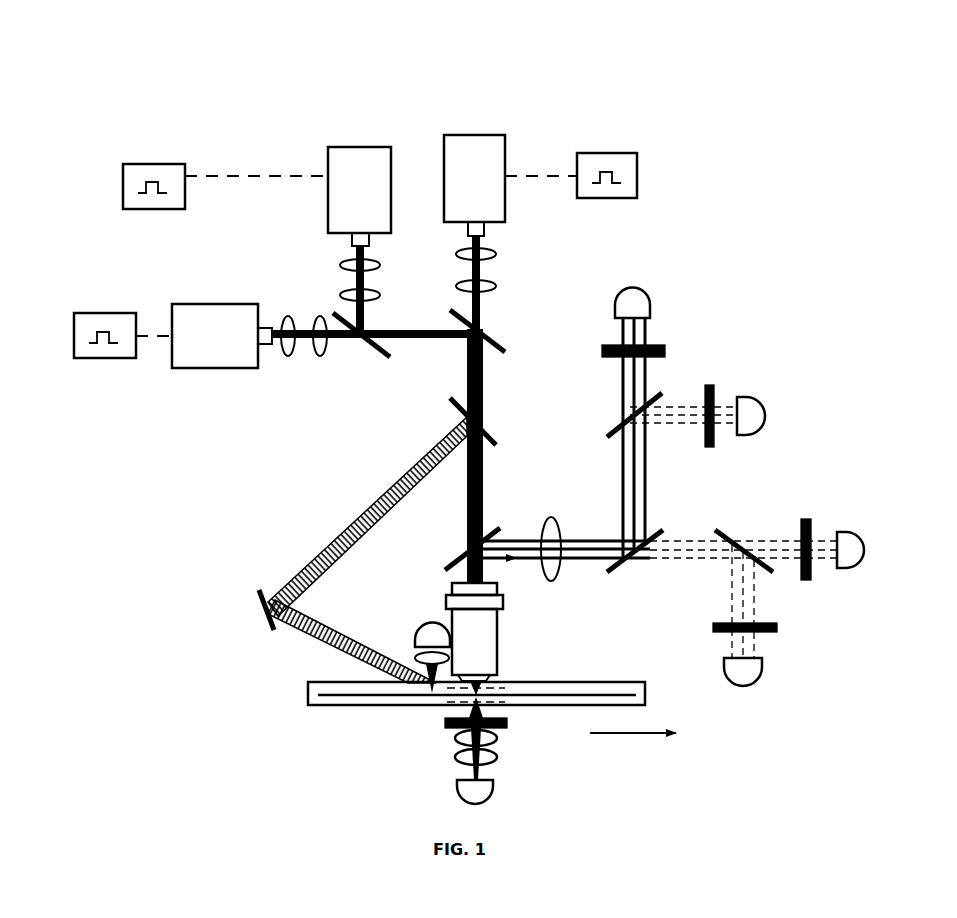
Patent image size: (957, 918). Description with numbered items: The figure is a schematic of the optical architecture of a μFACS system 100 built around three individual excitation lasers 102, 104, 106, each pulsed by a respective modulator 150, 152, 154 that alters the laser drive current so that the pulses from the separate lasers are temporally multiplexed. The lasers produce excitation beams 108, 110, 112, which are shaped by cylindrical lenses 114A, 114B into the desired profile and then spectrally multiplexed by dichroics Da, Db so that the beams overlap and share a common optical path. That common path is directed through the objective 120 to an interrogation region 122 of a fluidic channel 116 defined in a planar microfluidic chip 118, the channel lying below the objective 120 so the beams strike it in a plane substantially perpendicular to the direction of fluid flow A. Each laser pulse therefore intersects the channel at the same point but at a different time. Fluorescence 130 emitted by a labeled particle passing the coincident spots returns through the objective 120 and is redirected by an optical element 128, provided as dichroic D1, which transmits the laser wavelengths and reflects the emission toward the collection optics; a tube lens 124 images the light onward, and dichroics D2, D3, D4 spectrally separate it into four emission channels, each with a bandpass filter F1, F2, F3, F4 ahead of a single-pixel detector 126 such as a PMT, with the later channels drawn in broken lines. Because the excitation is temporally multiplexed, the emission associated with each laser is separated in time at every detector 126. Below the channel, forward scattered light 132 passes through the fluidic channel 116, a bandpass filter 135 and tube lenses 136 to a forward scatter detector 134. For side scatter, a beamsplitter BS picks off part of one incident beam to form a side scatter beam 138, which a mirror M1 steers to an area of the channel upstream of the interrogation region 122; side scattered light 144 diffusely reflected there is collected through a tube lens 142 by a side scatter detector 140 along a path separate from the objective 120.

The μFACS system 100 is at (832, 214).
The excitation laser 102 is at (500, 135).
The excitation laser 104 is at (358, 147).
The excitation laser 106 is at (236, 304).
The excitation beam 108 is at (482, 312).
The excitation beam 110 is at (367, 284).
The excitation beam 112 is at (338, 343).
The cylindrical lens 114A is at (500, 268).
The cylindrical lens 114B is at (338, 272).
The fluidic channel 116 is at (331, 692).
The planar microfluidic chip 118 is at (328, 706).
The objective 120 is at (502, 615).
The interrogation region 122 is at (446, 708).
The tube lens 124 is at (559, 520).
The detector 126 is at (780, 700).
The optical element 128 is at (501, 511).
The fluorescence 130 is at (519, 572).
The forward scattered light 132 is at (486, 712).
The forward scatter detector 134 is at (493, 788).
The bandpass filter 135 is at (456, 733).
The tube lens 136 is at (498, 752).
The side scatter beam 138 is at (394, 480).
The side scatter detector 140 is at (432, 625).
The tube lens 142 is at (418, 654).
The side scattered light 144 is at (426, 680).
The modulator 150 is at (606, 153).
The modulator 152 is at (151, 163).
The modulator 154 is at (112, 313).
The beamsplitter BS is at (450, 398).
The dichroic Da is at (380, 360).
The dichroic Db is at (500, 346).
The dichroic D1 is at (452, 555).
The dichroic D2 is at (612, 425).
The dichroic D3 is at (622, 570).
The dichroic D4 is at (727, 530).
The bandpass filter F1 is at (660, 345).
The bandpass filter F2 is at (714, 440).
The bandpass filter F3 is at (811, 580).
The bandpass filter F4 is at (777, 632).
The mirror M1 is at (260, 590).
The direction of fluid flow A is at (633, 746).